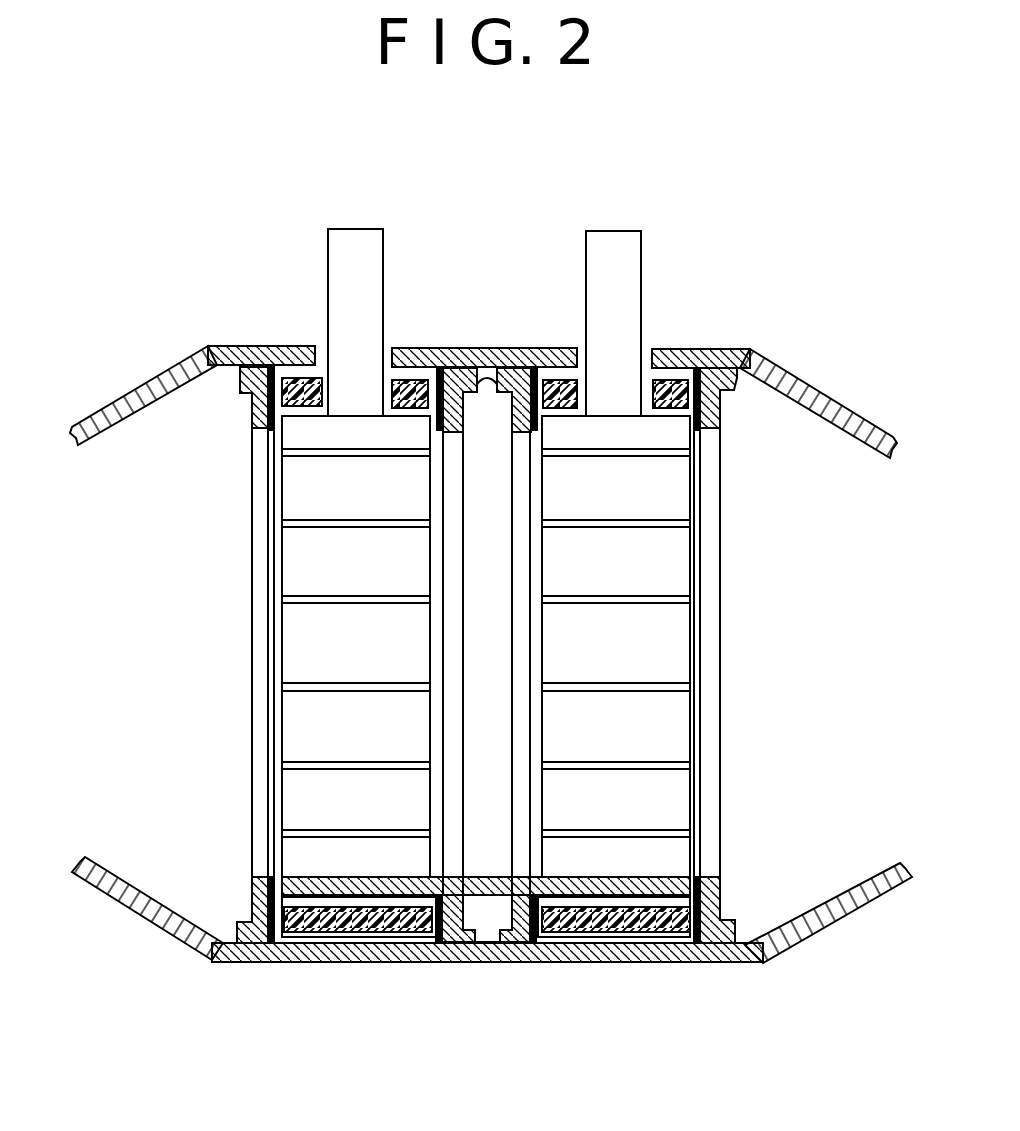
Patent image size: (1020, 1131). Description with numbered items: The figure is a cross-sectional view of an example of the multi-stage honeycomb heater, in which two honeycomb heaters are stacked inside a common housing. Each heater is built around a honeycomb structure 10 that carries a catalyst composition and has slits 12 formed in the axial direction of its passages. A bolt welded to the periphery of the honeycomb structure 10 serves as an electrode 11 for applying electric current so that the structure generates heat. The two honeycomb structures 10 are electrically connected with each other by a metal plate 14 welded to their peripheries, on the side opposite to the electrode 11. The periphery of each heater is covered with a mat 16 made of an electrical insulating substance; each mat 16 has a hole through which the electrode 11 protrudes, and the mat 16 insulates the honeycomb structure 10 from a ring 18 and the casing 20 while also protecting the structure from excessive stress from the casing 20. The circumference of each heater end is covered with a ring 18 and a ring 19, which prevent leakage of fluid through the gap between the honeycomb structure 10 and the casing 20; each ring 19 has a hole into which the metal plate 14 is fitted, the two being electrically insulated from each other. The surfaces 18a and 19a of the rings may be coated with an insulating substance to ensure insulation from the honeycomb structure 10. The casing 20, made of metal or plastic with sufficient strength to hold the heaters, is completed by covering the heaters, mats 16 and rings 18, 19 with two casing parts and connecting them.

The honeycomb structure 10 is at (678, 662).
The electrode 11 is at (618, 245).
The slits 12 is at (685, 527).
The metal plate 14 is at (653, 897).
The mat 16 is at (298, 373).
The ring 18 is at (717, 377).
The surface of ring 18a is at (270, 430).
The ring 19 is at (453, 373).
The surface of ring 19a is at (432, 350).
The casing 20 is at (843, 410).